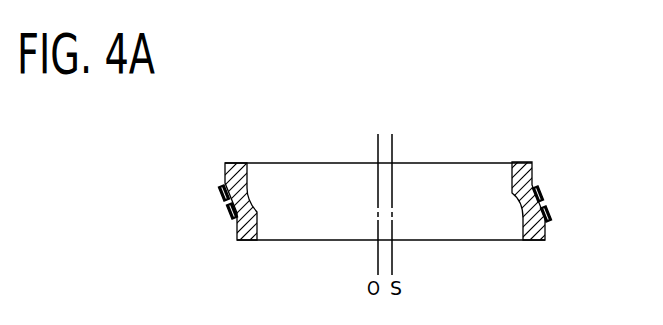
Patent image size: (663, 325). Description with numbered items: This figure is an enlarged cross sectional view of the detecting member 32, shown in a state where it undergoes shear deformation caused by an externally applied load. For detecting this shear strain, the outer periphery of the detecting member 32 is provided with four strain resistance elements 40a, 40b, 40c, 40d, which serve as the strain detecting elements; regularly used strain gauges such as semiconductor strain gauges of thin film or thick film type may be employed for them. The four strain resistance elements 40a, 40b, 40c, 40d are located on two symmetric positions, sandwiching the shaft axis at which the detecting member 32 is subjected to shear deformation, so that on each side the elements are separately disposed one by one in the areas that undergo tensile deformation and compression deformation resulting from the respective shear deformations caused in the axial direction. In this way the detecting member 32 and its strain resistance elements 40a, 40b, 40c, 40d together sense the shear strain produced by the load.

The detecting member 32 is at (293, 165).
The strain resistance element 40a is at (221, 196).
The strain resistance element 40b is at (229, 215).
The strain resistance element 40c is at (540, 192).
The strain resistance element 40d is at (552, 213).